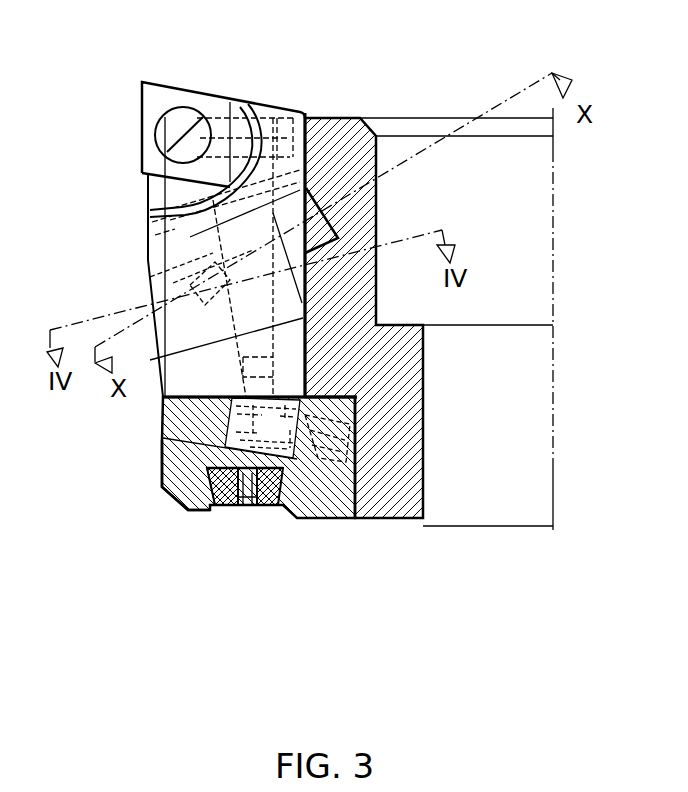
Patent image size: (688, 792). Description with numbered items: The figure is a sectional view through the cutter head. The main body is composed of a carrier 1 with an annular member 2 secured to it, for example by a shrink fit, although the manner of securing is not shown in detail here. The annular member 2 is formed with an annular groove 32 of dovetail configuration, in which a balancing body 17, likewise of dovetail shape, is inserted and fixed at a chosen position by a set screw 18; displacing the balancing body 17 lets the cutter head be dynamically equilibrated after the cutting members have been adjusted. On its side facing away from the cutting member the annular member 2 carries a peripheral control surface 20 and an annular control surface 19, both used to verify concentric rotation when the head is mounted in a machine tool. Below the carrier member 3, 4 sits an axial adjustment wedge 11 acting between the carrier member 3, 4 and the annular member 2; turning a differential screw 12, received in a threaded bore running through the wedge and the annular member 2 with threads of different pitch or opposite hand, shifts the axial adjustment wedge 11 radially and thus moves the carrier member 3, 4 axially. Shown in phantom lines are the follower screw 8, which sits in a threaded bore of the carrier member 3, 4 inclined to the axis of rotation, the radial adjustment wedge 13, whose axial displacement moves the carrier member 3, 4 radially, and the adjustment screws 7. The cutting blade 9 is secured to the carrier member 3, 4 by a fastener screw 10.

The carrier 1 is at (389, 509).
The annular member 2 is at (322, 504).
The carrier member 3 is at (206, 437).
The carrier member 4 is at (163, 397).
The adjustment screws 7 is at (287, 133).
The follower screw 8 is at (210, 373).
The cutting blade 9 is at (162, 100).
The fastener screw 10 is at (162, 133).
The axial adjustment wedge 11 is at (270, 423).
The differential screw 12 is at (347, 423).
The radial adjustment wedge 13 is at (253, 357).
The balancing body 17 is at (226, 495).
The set screw 18 is at (247, 487).
The annular control surface 19 is at (200, 512).
The peripheral control surface 20 is at (162, 465).
The annular groove 32 is at (205, 490).